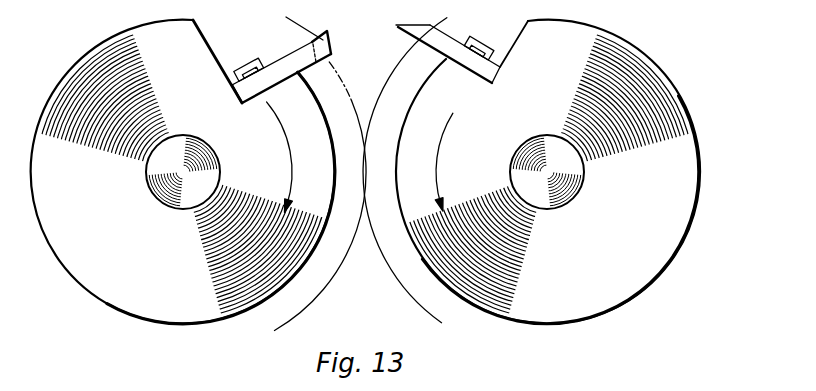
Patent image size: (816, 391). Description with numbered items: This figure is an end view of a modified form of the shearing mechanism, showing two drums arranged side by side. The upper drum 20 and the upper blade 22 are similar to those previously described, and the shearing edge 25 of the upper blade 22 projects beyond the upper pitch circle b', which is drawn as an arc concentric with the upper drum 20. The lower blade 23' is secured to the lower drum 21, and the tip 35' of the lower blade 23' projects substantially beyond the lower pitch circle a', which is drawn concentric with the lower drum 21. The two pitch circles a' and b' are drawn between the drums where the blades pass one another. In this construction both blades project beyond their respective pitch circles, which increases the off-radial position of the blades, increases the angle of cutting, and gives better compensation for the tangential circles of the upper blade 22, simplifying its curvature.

The upper drum 20 is at (66, 256).
The lower drum 21 is at (662, 261).
The upper blade 22 is at (278, 63).
The lower blade 23' is at (465, 49).
The shearing edge 25 is at (337, 30).
The tip of the lower blade 35' is at (431, 47).
The lower pitch circle a' is at (405, 172).
The upper pitch circle b' is at (321, 174).